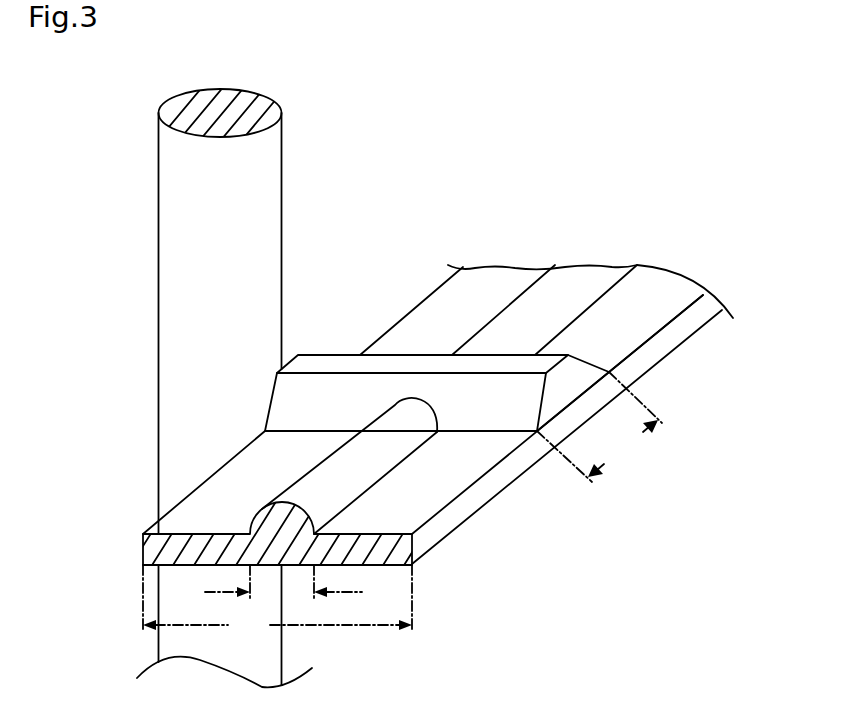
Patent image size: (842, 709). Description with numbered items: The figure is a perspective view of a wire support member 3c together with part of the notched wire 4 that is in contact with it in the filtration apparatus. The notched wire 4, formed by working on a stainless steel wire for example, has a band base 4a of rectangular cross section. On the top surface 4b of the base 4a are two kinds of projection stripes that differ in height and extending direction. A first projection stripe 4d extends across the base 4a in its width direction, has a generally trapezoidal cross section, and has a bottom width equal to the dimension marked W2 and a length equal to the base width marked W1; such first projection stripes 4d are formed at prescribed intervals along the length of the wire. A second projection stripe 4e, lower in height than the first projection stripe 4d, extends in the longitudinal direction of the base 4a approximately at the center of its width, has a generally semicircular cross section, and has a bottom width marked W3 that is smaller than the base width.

The cylindrical member / shaft 3c is at (180, 305).
The notched wire 4 is at (422, 292).
The band base 4a is at (493, 490).
The top surface 4b is at (661, 292).
The first projection stripe 4d is at (323, 362).
The second projection stripe 4e is at (328, 503).